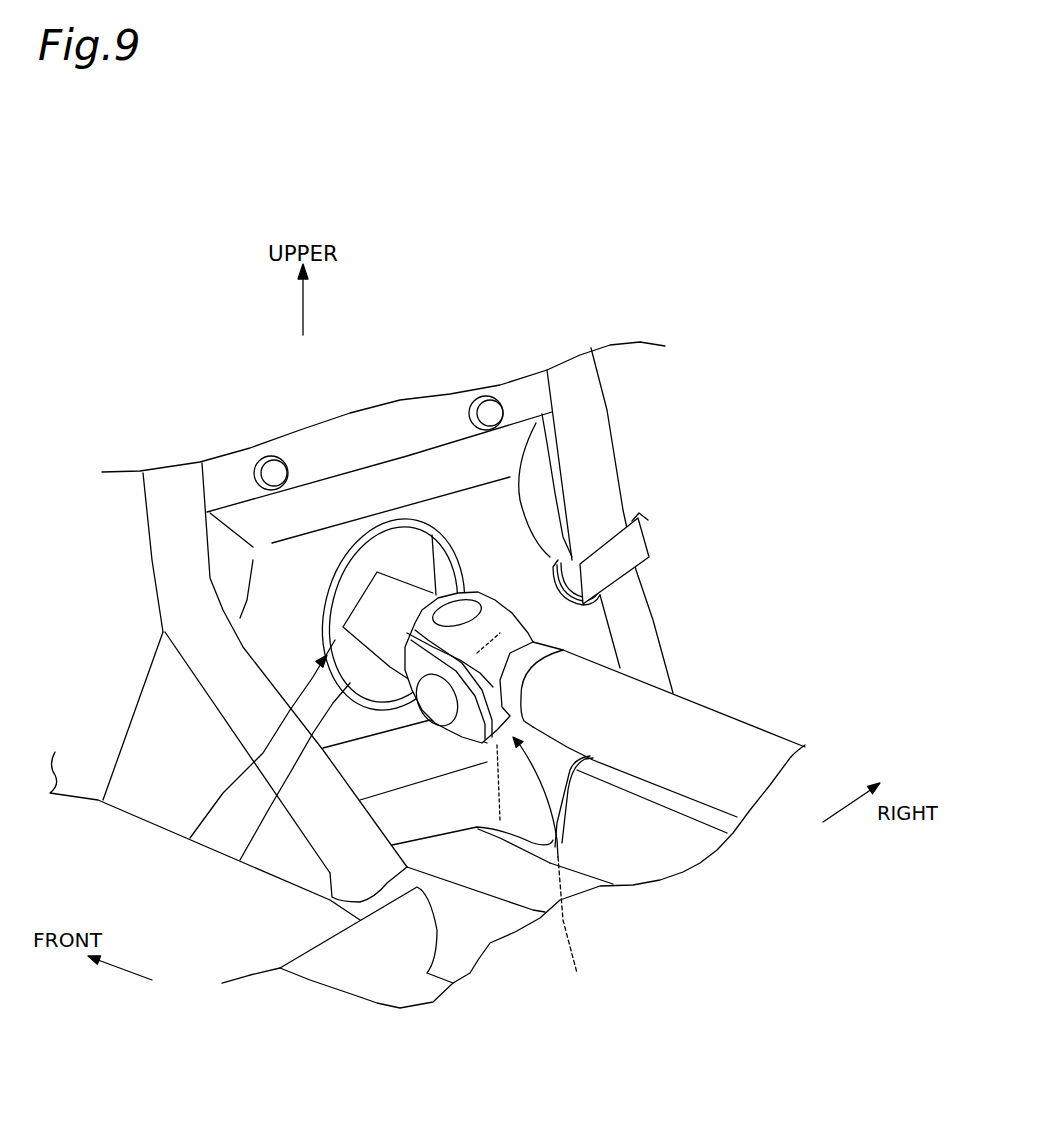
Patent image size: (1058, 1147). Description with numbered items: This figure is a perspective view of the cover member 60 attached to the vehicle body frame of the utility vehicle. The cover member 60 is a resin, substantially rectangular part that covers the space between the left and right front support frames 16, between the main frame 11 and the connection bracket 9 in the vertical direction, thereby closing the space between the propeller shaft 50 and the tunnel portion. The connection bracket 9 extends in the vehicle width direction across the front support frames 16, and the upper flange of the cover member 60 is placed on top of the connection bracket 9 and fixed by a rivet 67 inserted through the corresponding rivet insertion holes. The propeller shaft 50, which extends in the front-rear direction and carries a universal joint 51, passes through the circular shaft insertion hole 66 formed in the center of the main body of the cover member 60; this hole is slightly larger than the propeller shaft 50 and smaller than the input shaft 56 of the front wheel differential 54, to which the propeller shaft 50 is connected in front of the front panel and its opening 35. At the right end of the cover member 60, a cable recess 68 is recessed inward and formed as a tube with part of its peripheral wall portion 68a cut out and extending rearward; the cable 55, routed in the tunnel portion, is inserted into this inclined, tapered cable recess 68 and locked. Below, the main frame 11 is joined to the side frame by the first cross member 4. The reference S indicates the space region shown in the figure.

The connection bracket 9 is at (380, 410).
The rivet 67 is at (273, 468).
The front support frame 16 is at (177, 585).
The opening 35 is at (567, 503).
The cable 55 is at (636, 550).
The cable recess 68 is at (600, 597).
The peripheral wall portion 68a is at (588, 637).
The propeller shaft 50 is at (740, 738).
The cover member 60 is at (248, 622).
The shaft insertion hole 66 is at (335, 622).
The front wheel differential 54 is at (190, 838).
The input shaft 56 is at (240, 860).
The main frame 11 is at (667, 860).
The first cross member 4 is at (363, 975).
The universal joint 51 is at (560, 897).
The steering unit S is at (782, 616).